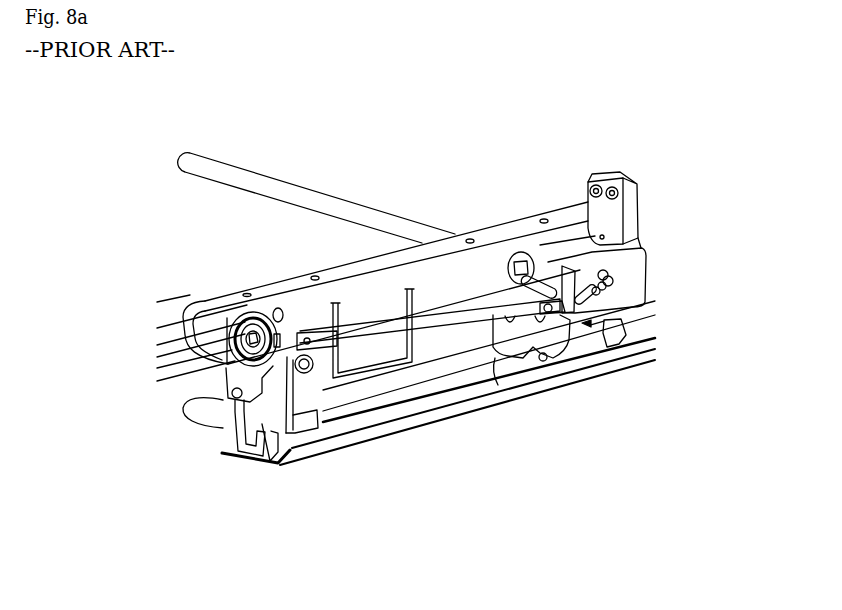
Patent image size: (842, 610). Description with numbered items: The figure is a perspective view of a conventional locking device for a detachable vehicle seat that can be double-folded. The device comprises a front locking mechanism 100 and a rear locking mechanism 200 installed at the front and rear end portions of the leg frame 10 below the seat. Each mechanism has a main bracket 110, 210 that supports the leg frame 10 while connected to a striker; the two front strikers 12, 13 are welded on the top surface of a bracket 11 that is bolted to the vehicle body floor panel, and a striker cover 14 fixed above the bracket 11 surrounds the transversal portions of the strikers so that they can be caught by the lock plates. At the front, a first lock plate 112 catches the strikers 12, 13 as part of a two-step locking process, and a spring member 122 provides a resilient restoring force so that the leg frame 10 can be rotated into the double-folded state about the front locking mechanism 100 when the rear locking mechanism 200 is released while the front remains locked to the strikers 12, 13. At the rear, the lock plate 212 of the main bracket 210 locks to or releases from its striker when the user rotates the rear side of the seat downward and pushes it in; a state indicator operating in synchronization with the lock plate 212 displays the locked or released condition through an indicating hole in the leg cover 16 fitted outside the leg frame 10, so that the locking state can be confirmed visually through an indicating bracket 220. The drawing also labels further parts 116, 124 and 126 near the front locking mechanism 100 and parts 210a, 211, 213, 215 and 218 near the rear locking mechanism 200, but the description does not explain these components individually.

The leg frame 10 is at (487, 260).
The bracket 11 is at (473, 390).
The striker 12 is at (333, 449).
The striker 13 is at (287, 447).
The striker cover 14 is at (215, 435).
The leg cover 16 is at (647, 275).
The front locking mechanism 100 is at (218, 410).
The main bracket 110 is at (270, 400).
The first lock plate 112 is at (362, 414).
The guide rail 116 is at (168, 370).
The spring member 122 is at (247, 313).
The upper guide rail 124 is at (168, 313).
The cam plate lower portion 126 is at (495, 385).
The rear locking mechanism 200 is at (637, 362).
The main bracket 210 is at (520, 390).
The pivot bolt head 210a is at (525, 257).
The stopper pin 211 is at (572, 358).
The lock plate 212 is at (575, 380).
The locking pin 213 is at (607, 263).
The mounting bracket 215 is at (592, 226).
The lever 218 is at (603, 238).
The indicating bracket 220 is at (597, 310).